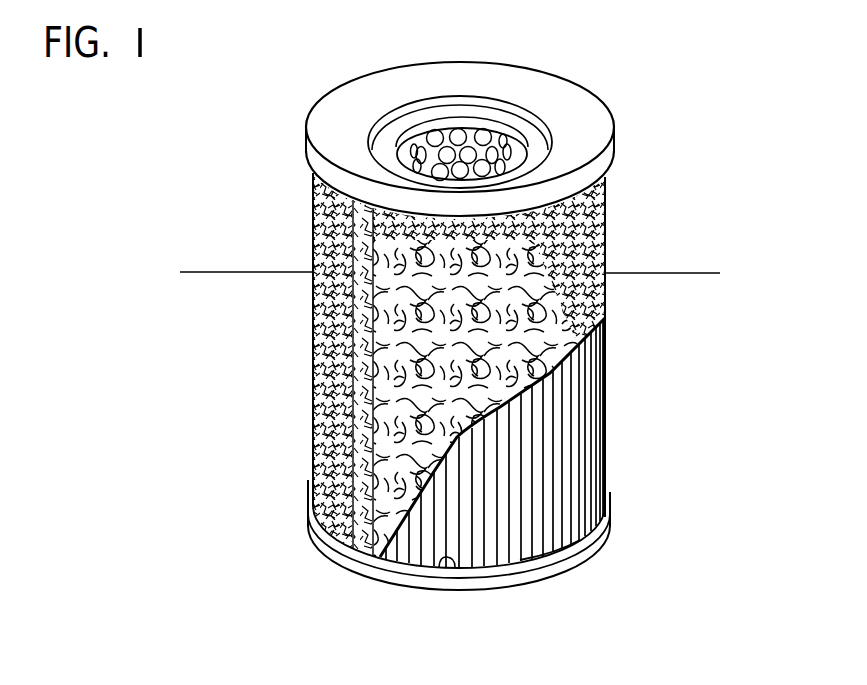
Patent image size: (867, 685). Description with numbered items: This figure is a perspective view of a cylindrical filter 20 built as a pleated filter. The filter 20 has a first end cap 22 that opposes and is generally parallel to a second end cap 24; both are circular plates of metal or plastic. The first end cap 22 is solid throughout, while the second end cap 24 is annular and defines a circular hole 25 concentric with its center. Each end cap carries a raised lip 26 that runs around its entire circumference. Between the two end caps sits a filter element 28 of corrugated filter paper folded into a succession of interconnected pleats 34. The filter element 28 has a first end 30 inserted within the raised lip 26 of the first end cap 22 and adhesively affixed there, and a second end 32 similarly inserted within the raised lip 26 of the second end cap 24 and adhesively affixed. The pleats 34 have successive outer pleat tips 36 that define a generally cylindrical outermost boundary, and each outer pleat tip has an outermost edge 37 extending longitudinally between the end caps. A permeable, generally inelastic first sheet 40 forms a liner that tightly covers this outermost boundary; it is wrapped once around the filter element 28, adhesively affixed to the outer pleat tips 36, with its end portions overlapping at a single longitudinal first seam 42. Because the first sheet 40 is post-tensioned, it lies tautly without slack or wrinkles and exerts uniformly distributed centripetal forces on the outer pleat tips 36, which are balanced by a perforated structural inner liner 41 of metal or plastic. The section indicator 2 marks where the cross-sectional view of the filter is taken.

The cylindrical filter 20 is at (257, 208).
The first end cap 22 is at (350, 569).
The second end cap 24 is at (587, 95).
The circular hole 25 is at (486, 134).
The raised lip 26 is at (613, 167).
The filter element 28 is at (607, 459).
The first end 30 is at (440, 567).
The second end 32 is at (606, 220).
The pleats 34 is at (507, 543).
The outer pleat tips 36 is at (565, 523).
The outermost edge 37 is at (567, 528).
The first sheet 40 is at (463, 312).
The perforated structural inner liner 41 is at (437, 162).
The first seam 42 is at (367, 433).
The section line 2- 2 is at (703, 348).